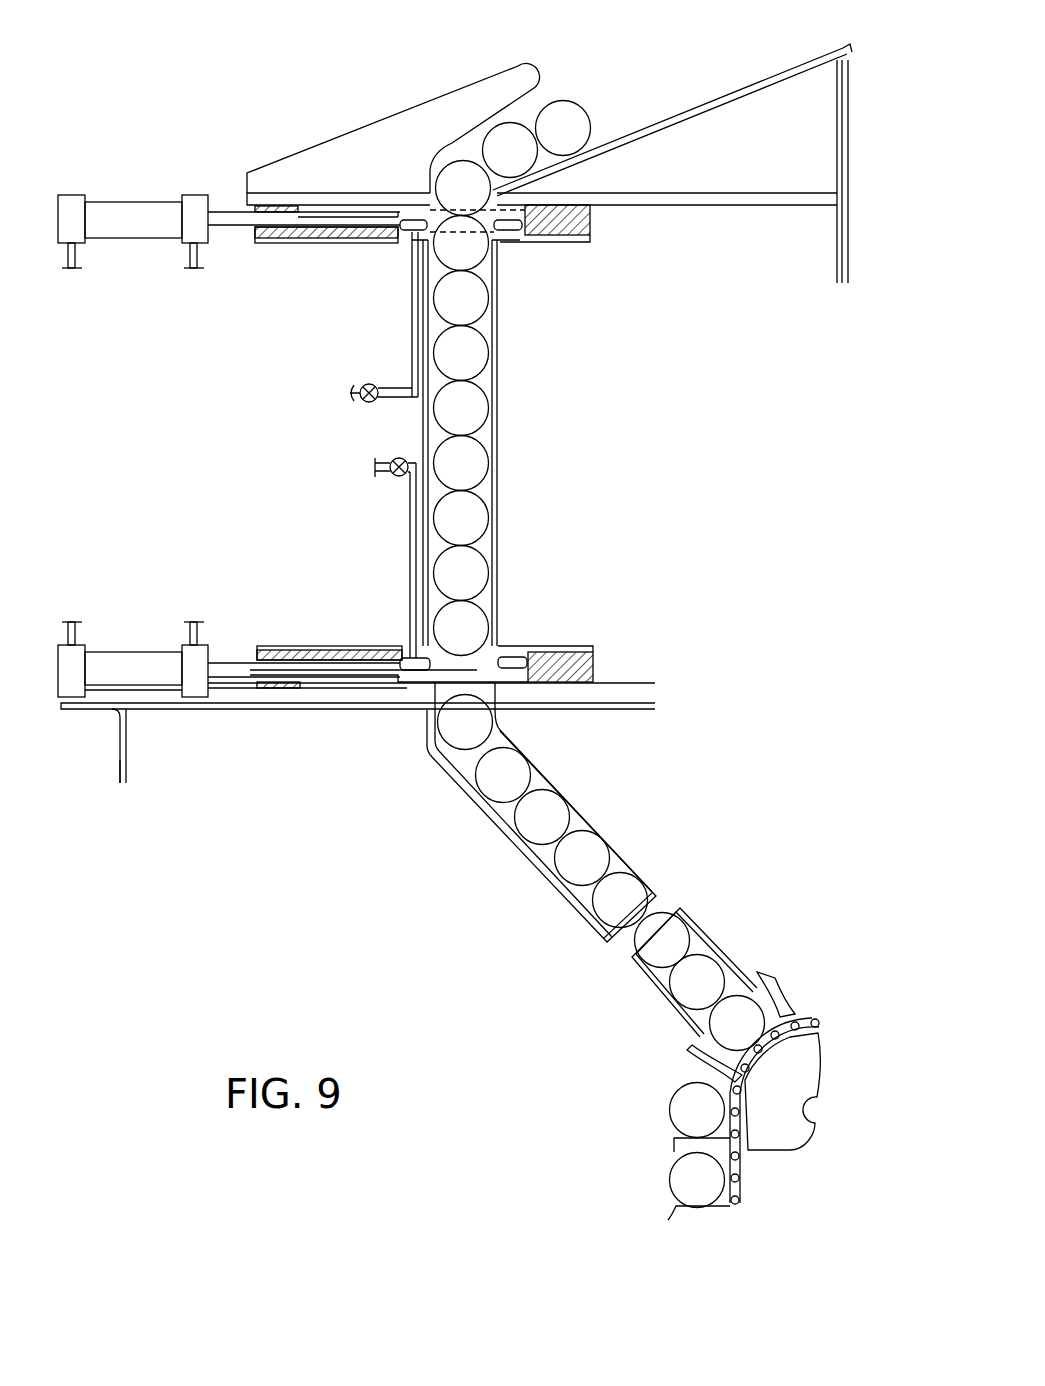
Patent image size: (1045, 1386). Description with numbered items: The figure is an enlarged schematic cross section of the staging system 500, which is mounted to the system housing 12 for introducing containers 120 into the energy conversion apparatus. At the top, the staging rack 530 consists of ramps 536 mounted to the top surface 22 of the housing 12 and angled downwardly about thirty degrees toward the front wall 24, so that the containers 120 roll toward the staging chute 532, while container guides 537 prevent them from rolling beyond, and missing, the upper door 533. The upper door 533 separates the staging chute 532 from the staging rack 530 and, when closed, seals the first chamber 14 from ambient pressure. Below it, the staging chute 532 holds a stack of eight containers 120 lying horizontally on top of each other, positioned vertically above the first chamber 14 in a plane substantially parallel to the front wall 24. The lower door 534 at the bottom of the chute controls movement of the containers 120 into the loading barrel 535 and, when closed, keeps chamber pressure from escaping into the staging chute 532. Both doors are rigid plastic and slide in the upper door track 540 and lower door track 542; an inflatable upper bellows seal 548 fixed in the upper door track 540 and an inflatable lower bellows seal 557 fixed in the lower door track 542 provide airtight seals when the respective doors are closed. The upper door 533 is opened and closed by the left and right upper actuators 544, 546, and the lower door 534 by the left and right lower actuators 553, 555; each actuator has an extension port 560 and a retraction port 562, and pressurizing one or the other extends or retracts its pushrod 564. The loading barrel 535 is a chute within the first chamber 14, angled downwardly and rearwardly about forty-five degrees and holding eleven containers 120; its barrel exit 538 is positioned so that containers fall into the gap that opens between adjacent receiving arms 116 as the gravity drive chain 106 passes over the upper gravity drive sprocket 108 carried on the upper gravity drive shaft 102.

The staging system 500 is at (262, 97).
The container guides 537 is at (412, 125).
The containers 120 is at (510, 137).
The staging rack 530 is at (697, 103).
The left upper actuator 544 is at (133, 192).
The right upper actuator 546 is at (140, 210).
The pushrod 564 is at (225, 216).
The ramps 536 is at (755, 165).
The extension port 560 is at (72, 256).
The retraction port 562 is at (196, 258).
The upper door track 540 is at (365, 240).
The upper bellows seal 548 is at (400, 237).
The upper door 533 is at (510, 212).
The staging chute 532 is at (497, 432).
The left lower actuator 553 is at (133, 636).
The right lower actuator 555 is at (125, 652).
The lower bellows seal 557 is at (402, 643).
The lower door track 542 is at (360, 635).
The lower door 534 is at (508, 678).
The front wall 24 is at (112, 720).
The system housing 12 is at (112, 742).
The top surface 22 is at (253, 713).
The first chamber 14 is at (153, 762).
The loading barrel 535 is at (517, 848).
The barrel exit 538 is at (718, 1028).
The receiving arm 116 is at (780, 1008).
The upper gravity drive shaft 102 is at (815, 1110).
The upper gravity drive sprocket 108 is at (780, 1125).
The gravity drive chain 106 is at (740, 1205).